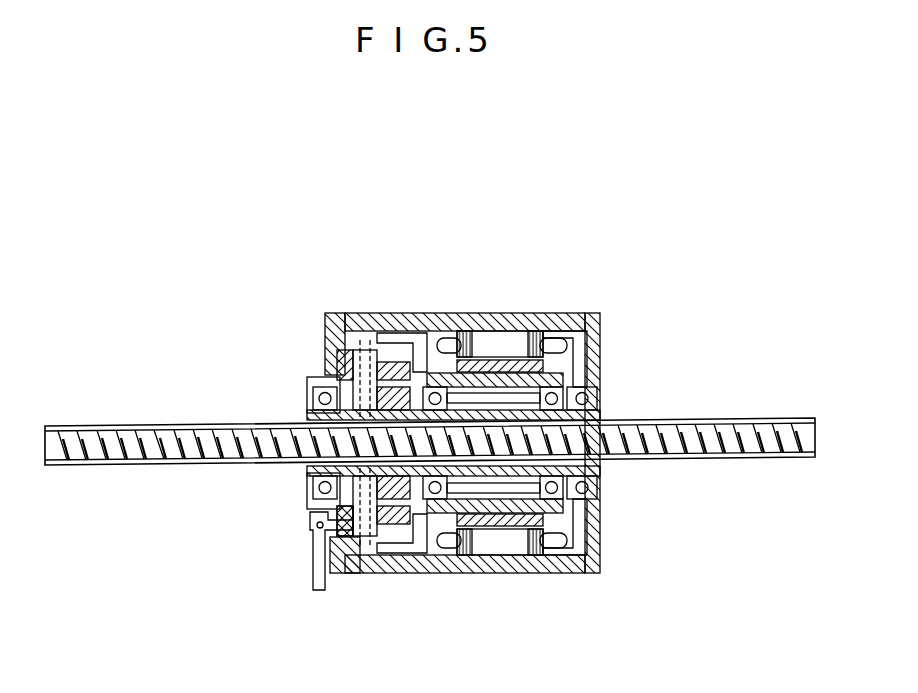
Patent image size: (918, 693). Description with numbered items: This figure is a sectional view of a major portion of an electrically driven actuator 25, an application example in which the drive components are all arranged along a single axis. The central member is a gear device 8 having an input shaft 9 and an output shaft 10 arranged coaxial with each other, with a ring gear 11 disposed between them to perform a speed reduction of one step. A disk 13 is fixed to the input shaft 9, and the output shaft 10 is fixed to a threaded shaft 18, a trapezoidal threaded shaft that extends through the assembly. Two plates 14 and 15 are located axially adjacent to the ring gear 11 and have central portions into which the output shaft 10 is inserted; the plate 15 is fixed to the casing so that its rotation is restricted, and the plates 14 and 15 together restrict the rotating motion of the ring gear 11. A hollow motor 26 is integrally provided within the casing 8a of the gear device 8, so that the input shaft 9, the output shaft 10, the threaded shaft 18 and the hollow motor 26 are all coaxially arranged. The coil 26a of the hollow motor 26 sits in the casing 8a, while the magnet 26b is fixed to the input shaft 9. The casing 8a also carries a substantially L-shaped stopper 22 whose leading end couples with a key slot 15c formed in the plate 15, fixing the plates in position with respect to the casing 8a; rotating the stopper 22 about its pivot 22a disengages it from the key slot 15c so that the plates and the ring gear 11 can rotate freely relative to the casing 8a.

The electrically driven actuator 25 is at (362, 250).
The gear device 8 is at (497, 567).
The casing 8a is at (463, 313).
The input shaft 9 is at (600, 508).
The output shaft 10 is at (305, 478).
The ring gear 11 is at (418, 560).
The disk 13 is at (457, 563).
The plate 14 is at (372, 555).
The plate 15 is at (327, 372).
The key slot 15c is at (350, 550).
The threaded shaft 18 is at (105, 455).
The stopper 22 is at (312, 572).
The pivot 22a is at (315, 525).
The hollow motor 26 is at (513, 352).
The coil 26a is at (540, 578).
The magnet 26b is at (565, 522).